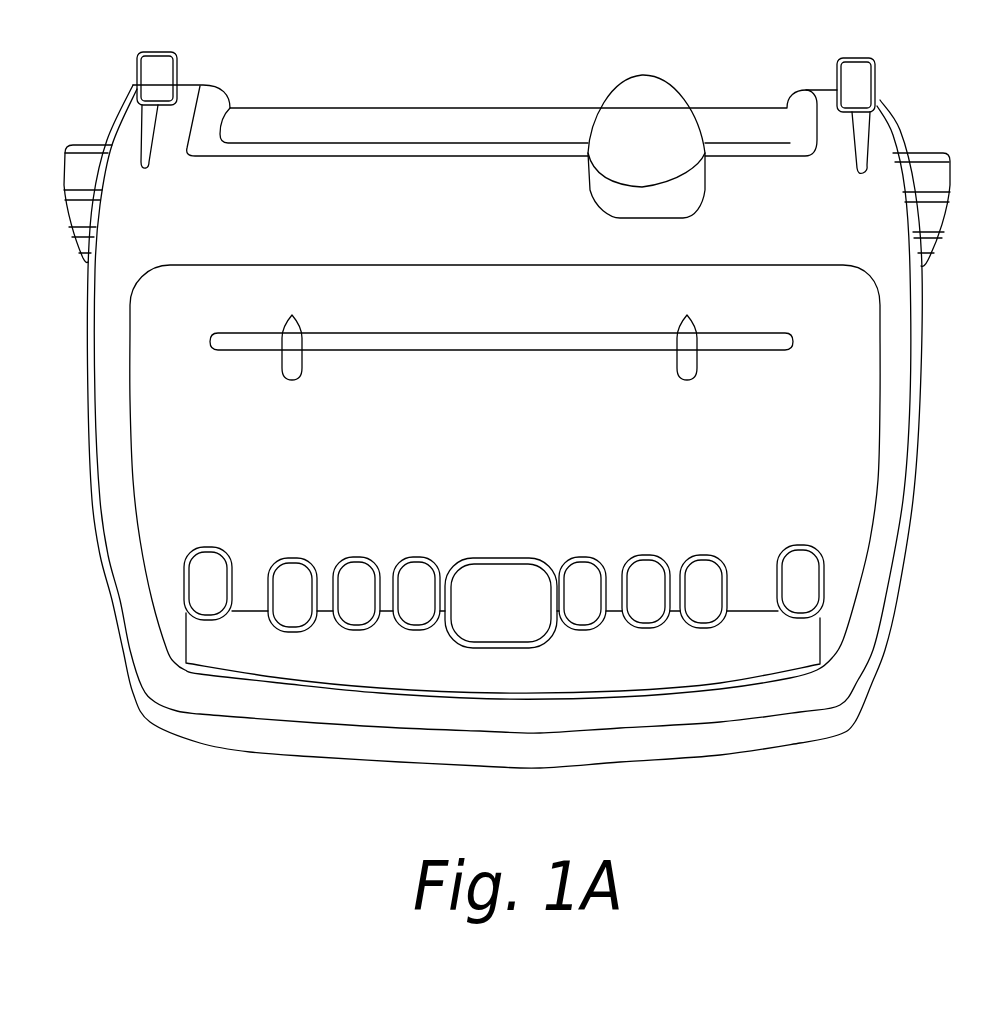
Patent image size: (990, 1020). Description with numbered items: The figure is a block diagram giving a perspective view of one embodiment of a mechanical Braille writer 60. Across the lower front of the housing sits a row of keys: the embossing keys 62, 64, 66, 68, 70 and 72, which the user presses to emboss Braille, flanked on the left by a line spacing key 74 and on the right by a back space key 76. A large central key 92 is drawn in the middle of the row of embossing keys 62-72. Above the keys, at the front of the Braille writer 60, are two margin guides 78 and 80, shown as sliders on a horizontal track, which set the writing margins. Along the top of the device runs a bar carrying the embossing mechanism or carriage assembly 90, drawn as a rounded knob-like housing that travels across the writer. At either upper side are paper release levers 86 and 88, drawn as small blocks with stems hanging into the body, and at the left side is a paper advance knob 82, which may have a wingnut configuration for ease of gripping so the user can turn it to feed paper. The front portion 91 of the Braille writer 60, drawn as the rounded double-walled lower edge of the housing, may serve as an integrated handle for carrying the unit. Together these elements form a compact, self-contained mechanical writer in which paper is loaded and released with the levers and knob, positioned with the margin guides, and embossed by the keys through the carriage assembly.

The mechanical Braille writer 60 is at (453, 95).
The embossing key 62 is at (292, 595).
The embossing key 64 is at (356, 593).
The embossing key 66 is at (416, 593).
The embossing key 68 is at (582, 593).
The embossing key 70 is at (646, 591).
The embossing key 72 is at (703, 591).
The line spacing key 74 is at (196, 596).
The back space key 76 is at (789, 594).
The margin guide 78 is at (292, 381).
The margin guide 80 is at (687, 381).
The paper advance knob 82 is at (73, 143).
The paper release lever 86 is at (158, 64).
The paper release lever 88 is at (859, 68).
The carriage assembly 90 is at (646, 146).
The front portion 91 is at (504, 426).
The central button 92 is at (501, 603).